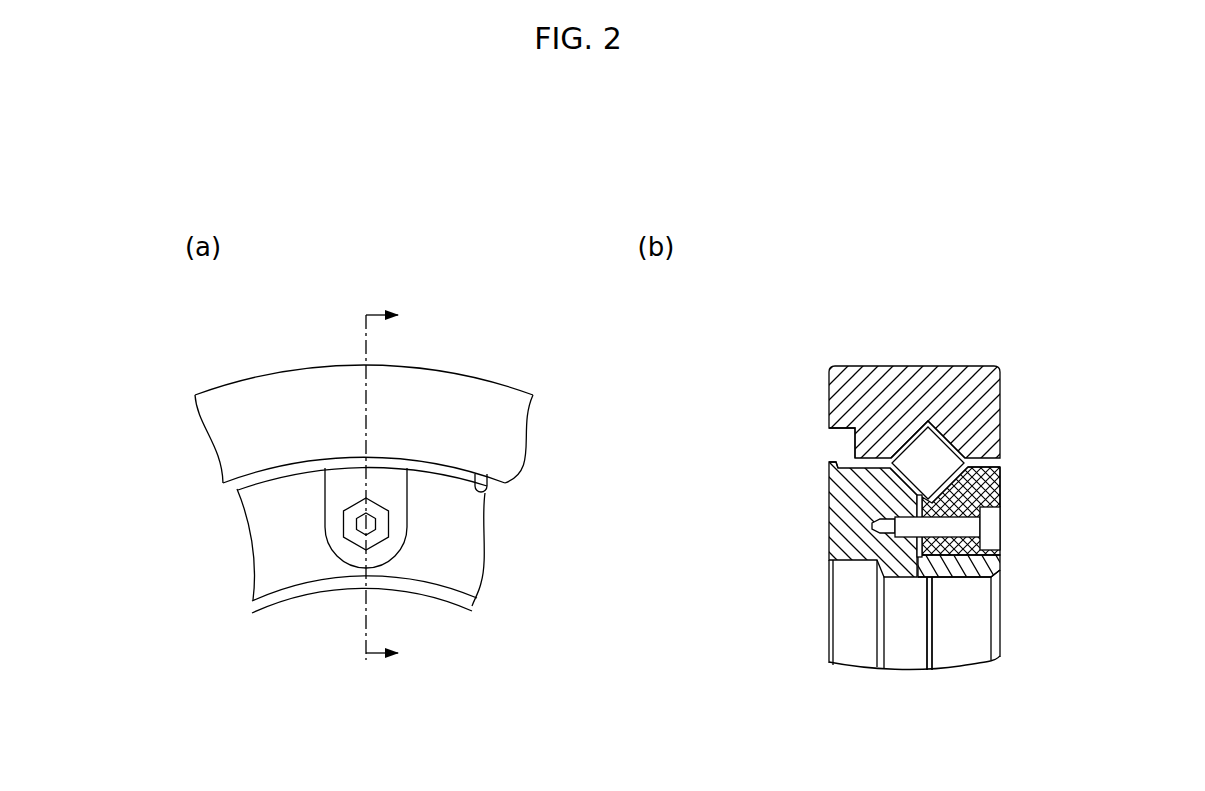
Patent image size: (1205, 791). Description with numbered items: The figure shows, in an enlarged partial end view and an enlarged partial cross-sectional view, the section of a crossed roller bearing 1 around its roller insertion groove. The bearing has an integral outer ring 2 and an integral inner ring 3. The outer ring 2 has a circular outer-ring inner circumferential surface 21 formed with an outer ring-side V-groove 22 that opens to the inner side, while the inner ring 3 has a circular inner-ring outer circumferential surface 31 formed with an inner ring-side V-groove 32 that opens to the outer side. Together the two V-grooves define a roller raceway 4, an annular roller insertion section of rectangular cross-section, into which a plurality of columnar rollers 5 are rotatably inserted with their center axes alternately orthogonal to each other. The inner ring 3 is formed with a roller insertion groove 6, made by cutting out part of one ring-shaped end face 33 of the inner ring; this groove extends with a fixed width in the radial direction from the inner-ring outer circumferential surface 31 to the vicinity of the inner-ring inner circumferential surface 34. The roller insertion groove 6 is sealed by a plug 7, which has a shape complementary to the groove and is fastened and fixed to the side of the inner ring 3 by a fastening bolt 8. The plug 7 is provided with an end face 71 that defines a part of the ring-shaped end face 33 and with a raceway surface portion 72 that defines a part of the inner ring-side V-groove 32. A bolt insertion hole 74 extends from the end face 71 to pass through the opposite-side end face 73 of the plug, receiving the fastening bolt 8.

The crossed roller bearing 1 is at (186, 328).
The outer ring 2 is at (211, 378).
The outer-ring inner circumferential surface 21 is at (485, 495).
The outer ring-side V-groove 22 is at (939, 436).
The inner ring 3 is at (220, 512).
The inner-ring outer circumferential surface 31 is at (450, 472).
The inner ring-side V-groove 32 is at (915, 483).
The ring-shaped end face 33 is at (460, 560).
The inner-ring inner circumferential surface 34 is at (433, 587).
The roller raceway 4 is at (927, 467).
The rollers 5 is at (908, 455).
The roller insertion groove 6 is at (325, 481).
The plug 7 is at (383, 488).
The end face 71 is at (337, 535).
The raceway surface portion 72 is at (963, 440).
The opposite-side end face 73 is at (918, 545).
The bolt insertion hole 74 is at (938, 562).
The fastening bolt 8 is at (377, 523).